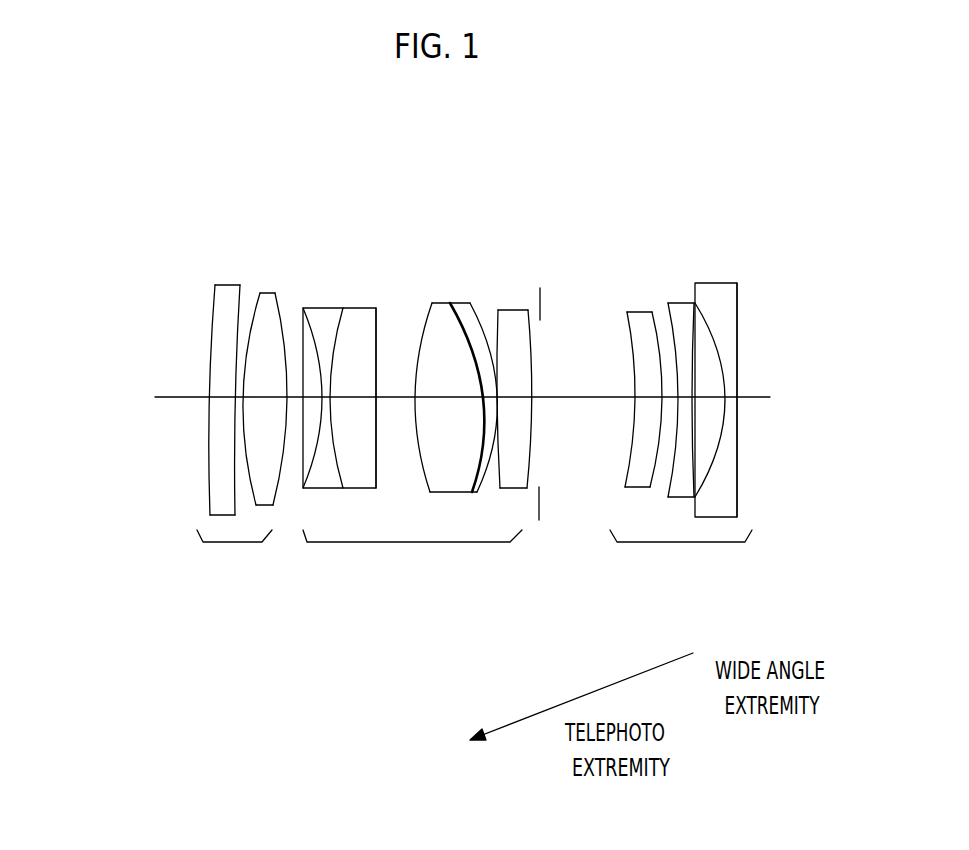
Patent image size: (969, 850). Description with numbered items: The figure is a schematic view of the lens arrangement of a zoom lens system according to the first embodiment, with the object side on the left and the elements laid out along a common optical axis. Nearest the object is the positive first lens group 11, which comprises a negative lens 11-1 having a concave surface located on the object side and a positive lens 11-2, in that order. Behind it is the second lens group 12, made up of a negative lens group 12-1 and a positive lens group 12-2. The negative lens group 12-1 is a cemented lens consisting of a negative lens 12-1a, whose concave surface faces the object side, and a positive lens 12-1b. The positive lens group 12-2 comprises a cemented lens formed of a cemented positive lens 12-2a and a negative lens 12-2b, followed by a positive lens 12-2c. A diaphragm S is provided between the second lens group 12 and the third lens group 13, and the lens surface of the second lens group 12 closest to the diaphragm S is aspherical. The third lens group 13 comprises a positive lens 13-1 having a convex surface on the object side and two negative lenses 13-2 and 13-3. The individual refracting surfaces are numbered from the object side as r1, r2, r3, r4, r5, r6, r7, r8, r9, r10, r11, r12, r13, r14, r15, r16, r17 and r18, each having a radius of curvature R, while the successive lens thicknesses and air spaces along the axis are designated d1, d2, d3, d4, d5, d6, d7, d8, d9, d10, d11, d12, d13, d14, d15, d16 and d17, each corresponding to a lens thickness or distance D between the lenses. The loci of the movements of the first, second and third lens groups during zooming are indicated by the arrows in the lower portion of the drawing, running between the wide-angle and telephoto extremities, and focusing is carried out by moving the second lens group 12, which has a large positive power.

The first lens group 11 is at (140, 298).
The negative lens 11-1 is at (155, 336).
The positive lens 11-2 is at (216, 331).
The second lens group 12 is at (483, 547).
The negative lens group 12-1 is at (202, 426).
The negative lens 12-1a is at (287, 294).
The positive lens 12-1b is at (336, 294).
The positive lens group 12-2 is at (421, 420).
The cemented positive lens 12-2a is at (423, 295).
The negative lens 12-2b is at (463, 296).
The positive lens 12-2c is at (536, 323).
The diaphragm S is at (539, 520).
The third lens group 13 is at (705, 547).
The positive lens 13-1 is at (615, 322).
The negative lens 13-2 is at (751, 327).
The negative lens 13-3 is at (774, 337).
The lens surface r1 is at (217, 285).
The lens surface r2 is at (240, 285).
The lens surface r3 is at (260, 293).
The lens surface r4 is at (275, 293).
The lens surface r5 is at (303, 308).
The lens surface r6 is at (305, 310).
The lens surface r7 is at (345, 308).
The lens surface r8 is at (376, 308).
The lens surface r9 is at (432, 303).
The lens surface r10 is at (468, 307).
The lens surface r11 is at (486, 305).
The lens surface r12 is at (527, 310).
The lens surface r13 is at (627, 312).
The lens surface r14 is at (652, 312).
The lens surface r15 is at (668, 303).
The lens surface r16 is at (695, 303).
The lens surface r17 is at (697, 287).
The lens surface r18 is at (736, 283).
The lens thickness or distance d1 is at (229, 397).
The lens thickness or distance d2 is at (241, 397).
The lens thickness or distance d3 is at (265, 397).
The lens thickness or distance d4 is at (300, 397).
The lens thickness or distance d5 is at (325, 397).
The lens thickness or distance d6 is at (355, 397).
The lens thickness or distance d7 is at (397, 397).
The lens thickness or distance d8 is at (445, 397).
The lens thickness or distance d9 is at (485, 397).
The lens thickness or distance d10 is at (498, 397).
The lens thickness or distance d11 is at (516, 397).
The lens thickness or distance d12 is at (584, 397).
The lens thickness or distance d13 is at (652, 397).
The lens thickness or distance d14 is at (670, 397).
The lens thickness or distance d15 is at (688, 397).
The lens thickness or distance d16 is at (707, 397).
The lens thickness or distance d17 is at (736, 397).